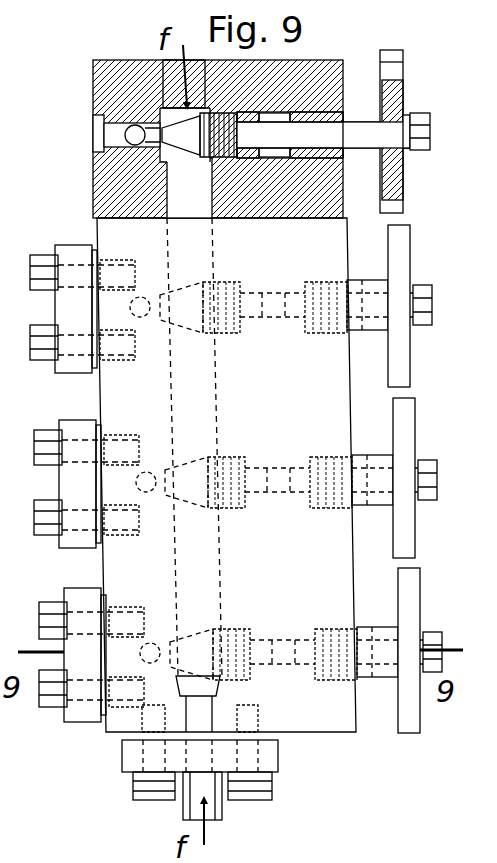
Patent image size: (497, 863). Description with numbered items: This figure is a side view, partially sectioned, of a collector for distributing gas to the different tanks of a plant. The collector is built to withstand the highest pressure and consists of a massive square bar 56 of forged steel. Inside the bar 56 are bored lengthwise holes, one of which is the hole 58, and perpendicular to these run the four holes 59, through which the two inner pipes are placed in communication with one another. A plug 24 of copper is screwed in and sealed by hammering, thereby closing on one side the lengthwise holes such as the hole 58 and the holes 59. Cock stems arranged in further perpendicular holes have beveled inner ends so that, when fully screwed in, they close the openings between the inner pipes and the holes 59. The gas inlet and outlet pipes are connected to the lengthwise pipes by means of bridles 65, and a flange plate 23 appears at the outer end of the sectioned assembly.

The flange plate 23 is at (387, 188).
The plug 24 is at (158, 62).
The massive square bar 56 is at (286, 158).
The hole 58 is at (175, 185).
The holes 59 is at (125, 133).
The bridles 65 is at (130, 757).